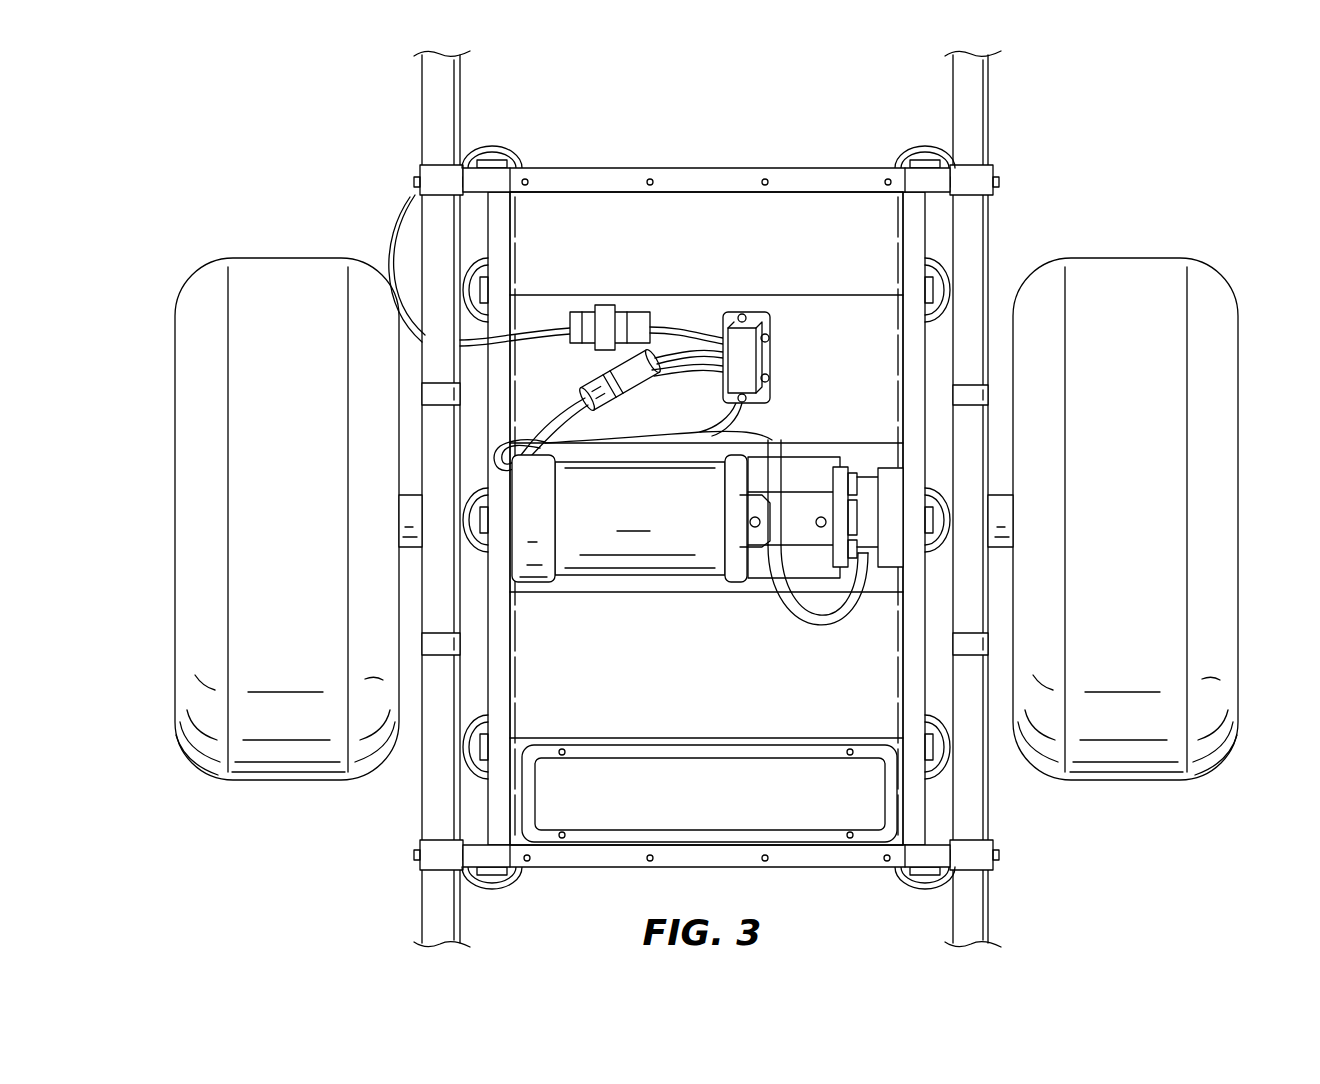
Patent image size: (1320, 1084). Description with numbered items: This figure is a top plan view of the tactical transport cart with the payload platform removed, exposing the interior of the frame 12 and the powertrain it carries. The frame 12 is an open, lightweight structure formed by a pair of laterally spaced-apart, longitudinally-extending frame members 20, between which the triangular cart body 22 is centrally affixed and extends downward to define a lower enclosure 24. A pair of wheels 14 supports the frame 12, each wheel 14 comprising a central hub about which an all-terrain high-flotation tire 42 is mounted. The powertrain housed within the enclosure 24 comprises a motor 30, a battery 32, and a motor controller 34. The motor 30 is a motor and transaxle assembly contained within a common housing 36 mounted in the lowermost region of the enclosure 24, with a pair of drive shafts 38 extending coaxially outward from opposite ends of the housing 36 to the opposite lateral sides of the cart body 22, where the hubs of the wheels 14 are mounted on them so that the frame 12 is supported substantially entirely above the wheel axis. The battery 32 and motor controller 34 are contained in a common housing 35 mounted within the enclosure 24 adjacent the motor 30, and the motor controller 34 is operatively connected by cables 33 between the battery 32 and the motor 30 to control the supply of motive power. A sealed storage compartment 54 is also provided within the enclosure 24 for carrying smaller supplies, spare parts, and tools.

The frame 12 is at (965, 270).
The wheels 14 is at (175, 568).
The frame members 20 is at (440, 118).
The cart body 22 is at (502, 712).
The lower enclosure 24 is at (855, 695).
The motor 30 is at (612, 545).
The battery 32 is at (842, 235).
The cables 33 is at (578, 420).
The motor controller 34 is at (745, 375).
The common housing 35 is at (684, 256).
The housing 36 is at (629, 518).
The drive shafts 38 is at (415, 507).
The all-terrain high-flotation tire 42 is at (285, 650).
The sealed storage compartment 54 is at (684, 711).